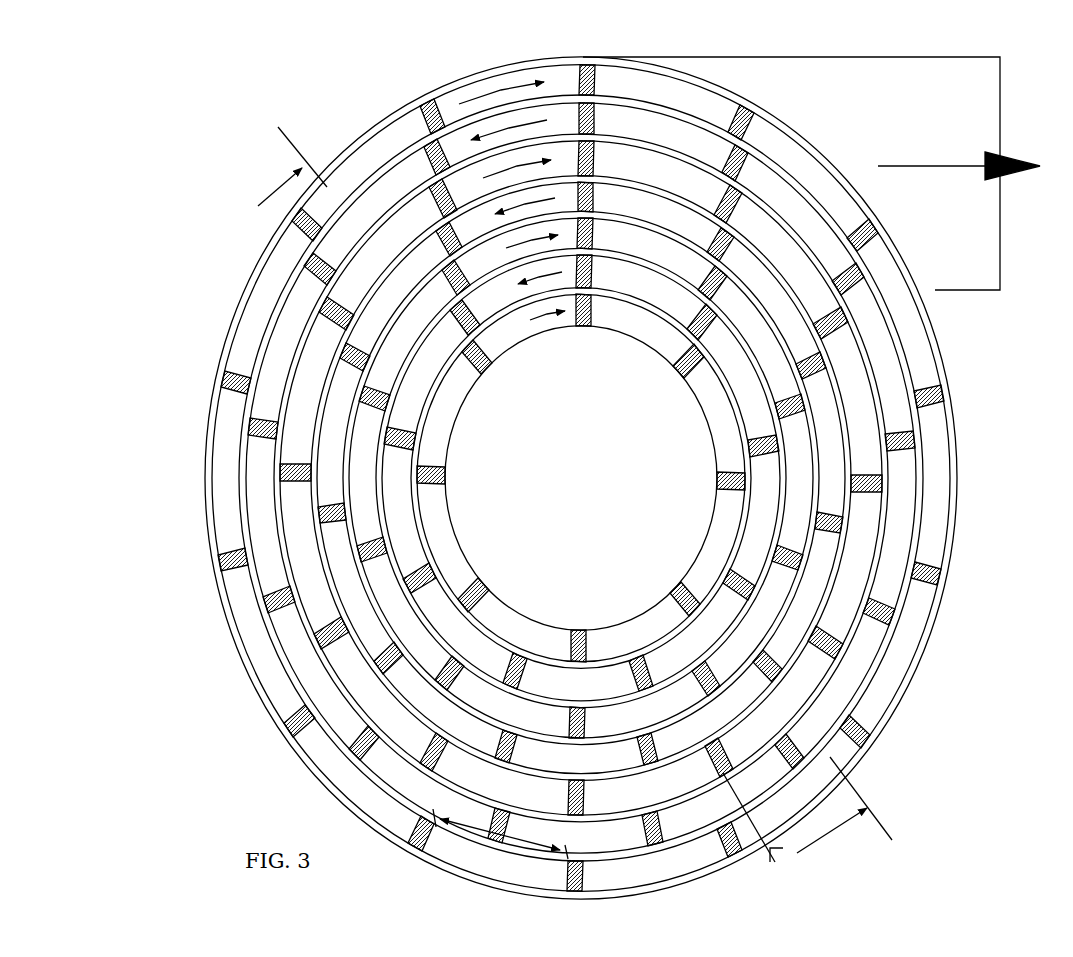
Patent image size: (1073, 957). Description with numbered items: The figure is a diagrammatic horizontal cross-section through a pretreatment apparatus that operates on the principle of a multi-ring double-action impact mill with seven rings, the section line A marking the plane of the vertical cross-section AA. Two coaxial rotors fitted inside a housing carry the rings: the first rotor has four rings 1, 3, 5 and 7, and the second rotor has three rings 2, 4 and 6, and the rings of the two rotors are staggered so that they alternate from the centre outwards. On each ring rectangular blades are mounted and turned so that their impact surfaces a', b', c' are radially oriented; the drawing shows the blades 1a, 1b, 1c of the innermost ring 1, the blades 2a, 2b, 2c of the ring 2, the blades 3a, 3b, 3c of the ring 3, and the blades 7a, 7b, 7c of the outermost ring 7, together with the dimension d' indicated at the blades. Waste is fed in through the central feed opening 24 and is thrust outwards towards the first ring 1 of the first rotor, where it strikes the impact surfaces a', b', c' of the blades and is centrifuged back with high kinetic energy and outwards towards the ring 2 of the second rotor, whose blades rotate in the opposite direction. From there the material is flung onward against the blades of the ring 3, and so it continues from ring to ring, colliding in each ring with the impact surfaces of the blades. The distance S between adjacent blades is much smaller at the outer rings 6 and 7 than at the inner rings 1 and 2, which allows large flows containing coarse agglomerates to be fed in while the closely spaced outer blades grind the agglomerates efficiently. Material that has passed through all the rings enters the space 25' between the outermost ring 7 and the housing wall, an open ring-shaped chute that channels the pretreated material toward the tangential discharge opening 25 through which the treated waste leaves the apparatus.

The first ring 1 is at (581, 478).
The second ring 2 is at (581, 477).
The third ring 3 is at (581, 477).
The fourth ring 4 is at (581, 478).
The fifth ring 5 is at (581, 478).
The sixth ring 6 is at (581, 478).
The seventh ring 7 is at (581, 478).
The feed opening 24 is at (607, 486).
The discharge opening 25 is at (811, 173).
The space between outermost ring and housing wall 25' is at (999, 483).
The blade of first ring 1a is at (718, 472).
The blade of first ring 1b is at (684, 372).
The blade of first ring 1c is at (583, 328).
The blade of second ring 2a is at (763, 433).
The blade of second ring 2b is at (694, 312).
The blade of second ring 2c is at (600, 277).
The blade of third ring 3a is at (790, 394).
The blade of third ring 3b is at (710, 278).
The blade of third ring 3c is at (601, 236).
The blade of seventh ring 7a is at (864, 228).
The blade of seventh ring 7b is at (742, 114).
The blade of seventh ring 7c is at (600, 84).
The impact surface a' is at (803, 372).
The impact surface b' is at (729, 258).
The impact surface c' is at (618, 195).
The ring wall thickness d' is at (751, 642).
The distance between blades S is at (500, 834).
The cross-section AA A is at (566, 496).